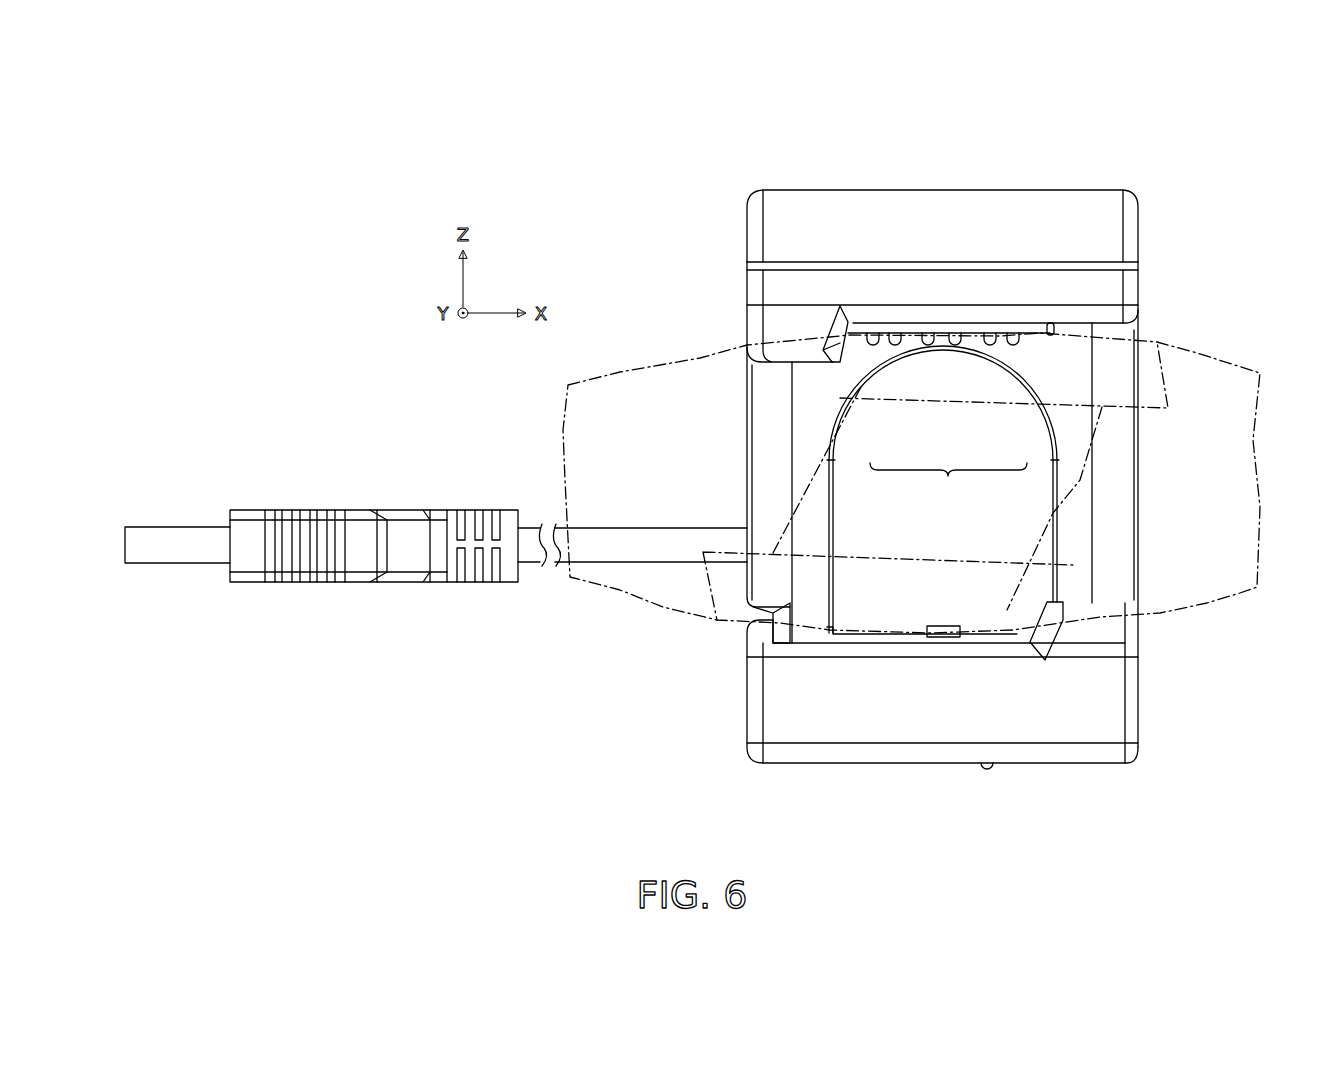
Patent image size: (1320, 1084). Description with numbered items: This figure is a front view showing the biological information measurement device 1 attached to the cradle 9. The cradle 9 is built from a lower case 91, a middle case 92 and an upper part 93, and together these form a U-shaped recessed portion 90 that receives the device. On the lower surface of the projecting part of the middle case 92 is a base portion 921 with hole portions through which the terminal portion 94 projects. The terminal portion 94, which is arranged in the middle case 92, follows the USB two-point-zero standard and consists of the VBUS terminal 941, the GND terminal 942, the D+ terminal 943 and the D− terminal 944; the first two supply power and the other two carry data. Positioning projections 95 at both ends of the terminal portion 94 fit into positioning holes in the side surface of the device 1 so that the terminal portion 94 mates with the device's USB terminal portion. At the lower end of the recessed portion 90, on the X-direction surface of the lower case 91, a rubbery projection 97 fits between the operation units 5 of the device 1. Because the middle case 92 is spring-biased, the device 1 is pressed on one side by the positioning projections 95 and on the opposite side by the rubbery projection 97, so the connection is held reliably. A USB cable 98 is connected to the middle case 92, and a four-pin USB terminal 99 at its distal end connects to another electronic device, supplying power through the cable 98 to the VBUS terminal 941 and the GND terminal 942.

The biological information measurement device 1 is at (1218, 622).
The operation units 5 is at (850, 640).
The cradle 9 is at (977, 455).
The recessed portion 90 is at (436, 572).
The lower case 91 is at (1020, 765).
The middle case 92 is at (977, 502).
The base portion 921 is at (1052, 326).
The upper cover 93 is at (941, 200).
The terminal portion 94 is at (943, 483).
The VBUS terminal 941 is at (895, 346).
The GND terminal 942 is at (991, 346).
The D+ terminal 943 is at (928, 346).
The D− terminal 944 is at (957, 346).
The positioning projections 95 is at (872, 346).
The rubbery projection 97 is at (943, 640).
The USB cable 98 is at (543, 564).
The USB terminal 99 is at (250, 512).